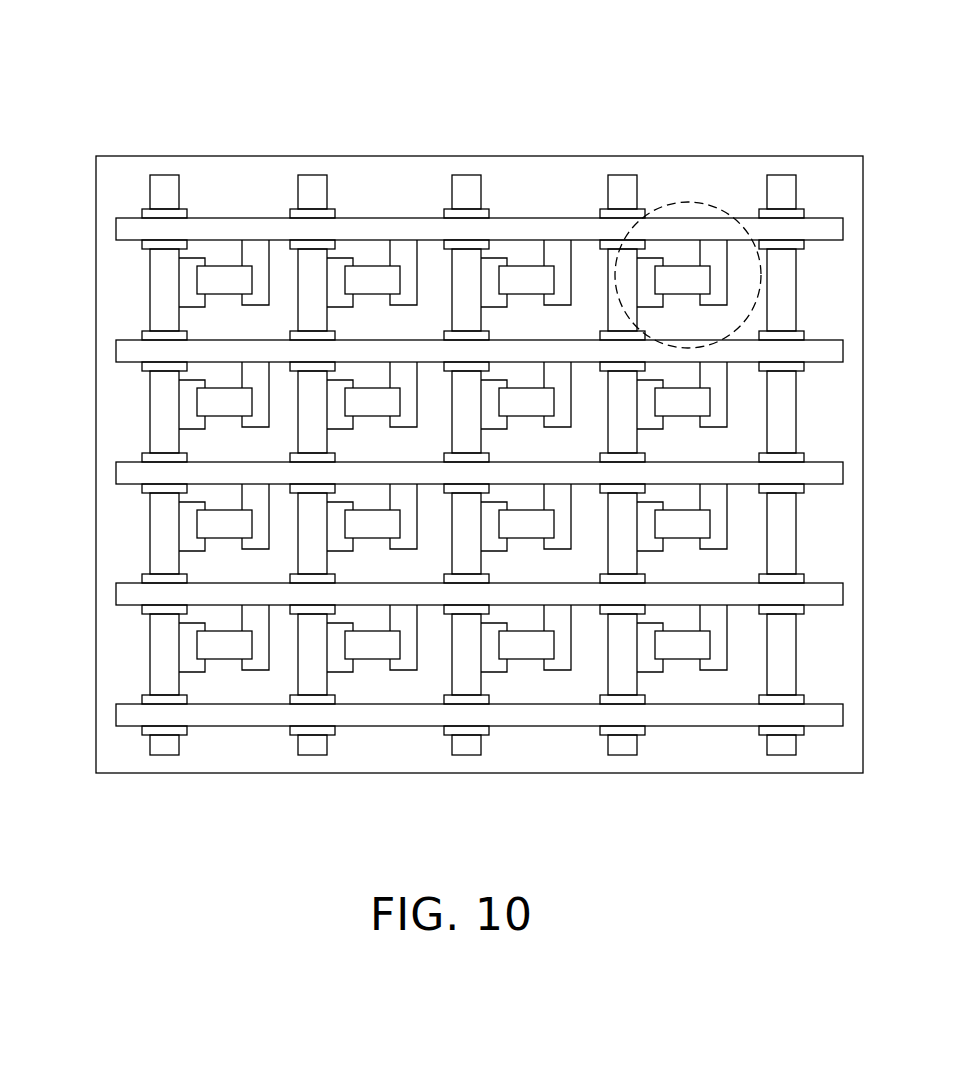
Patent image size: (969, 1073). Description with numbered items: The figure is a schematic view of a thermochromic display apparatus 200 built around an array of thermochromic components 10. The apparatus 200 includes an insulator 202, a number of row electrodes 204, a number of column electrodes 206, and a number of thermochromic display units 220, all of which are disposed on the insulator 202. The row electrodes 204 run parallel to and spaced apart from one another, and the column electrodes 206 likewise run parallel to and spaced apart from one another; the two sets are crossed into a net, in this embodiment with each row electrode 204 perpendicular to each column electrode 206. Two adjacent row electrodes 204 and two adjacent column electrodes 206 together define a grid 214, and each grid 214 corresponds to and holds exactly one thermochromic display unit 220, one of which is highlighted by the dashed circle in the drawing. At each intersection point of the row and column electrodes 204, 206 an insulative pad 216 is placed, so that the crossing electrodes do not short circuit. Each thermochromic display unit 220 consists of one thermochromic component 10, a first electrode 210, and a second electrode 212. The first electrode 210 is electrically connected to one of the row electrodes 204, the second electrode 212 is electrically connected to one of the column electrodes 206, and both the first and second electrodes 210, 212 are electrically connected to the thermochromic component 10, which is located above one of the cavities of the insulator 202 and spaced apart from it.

The thermochromic display apparatus 200 is at (446, 392).
The insulator 202 is at (96, 530).
The row electrodes 204 is at (128, 231).
The column electrodes 206 is at (165, 195).
The first electrode 210 is at (408, 277).
The second electrode 212 is at (335, 273).
The grid 214 is at (370, 308).
The insulative pads 216 is at (482, 213).
The thermochromic component 10 is at (375, 277).
The thermochromic display units 220 is at (688, 202).